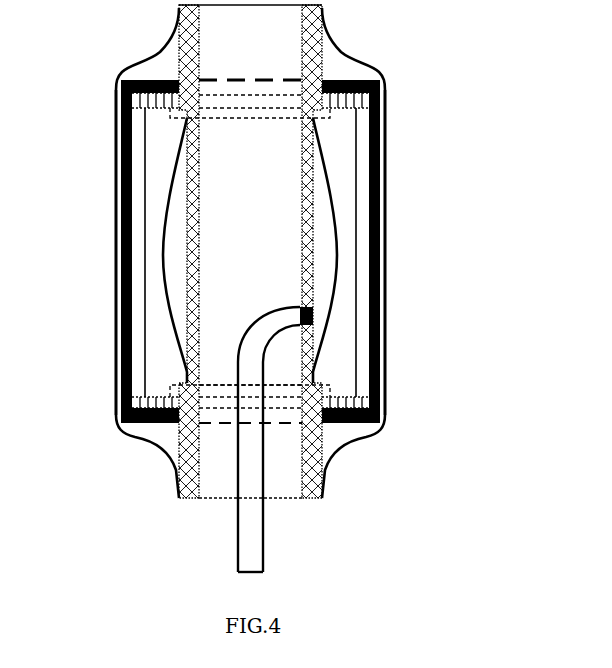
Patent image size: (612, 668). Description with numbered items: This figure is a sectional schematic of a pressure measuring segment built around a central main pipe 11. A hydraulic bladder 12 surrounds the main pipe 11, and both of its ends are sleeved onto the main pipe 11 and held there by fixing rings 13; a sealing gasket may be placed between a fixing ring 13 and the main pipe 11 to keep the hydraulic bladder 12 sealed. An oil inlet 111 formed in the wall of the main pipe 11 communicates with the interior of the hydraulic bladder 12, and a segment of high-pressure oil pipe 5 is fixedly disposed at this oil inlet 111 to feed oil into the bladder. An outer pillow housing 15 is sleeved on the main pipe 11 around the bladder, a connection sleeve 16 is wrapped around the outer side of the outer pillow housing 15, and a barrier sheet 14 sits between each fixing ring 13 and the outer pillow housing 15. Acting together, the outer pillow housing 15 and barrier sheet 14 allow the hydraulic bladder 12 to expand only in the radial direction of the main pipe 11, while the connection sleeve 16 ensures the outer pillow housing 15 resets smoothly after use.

The high-pressure oil pipe 5 is at (240, 560).
The main pipe 11 is at (314, 218).
The oil inlet 111 is at (314, 320).
The hydraulic bladder 12 is at (166, 226).
The fixing ring 13 is at (170, 390).
The barrier sheet 14 is at (377, 403).
The outer pillow housing 15 is at (117, 268).
The connection sleeve 16 is at (132, 65).